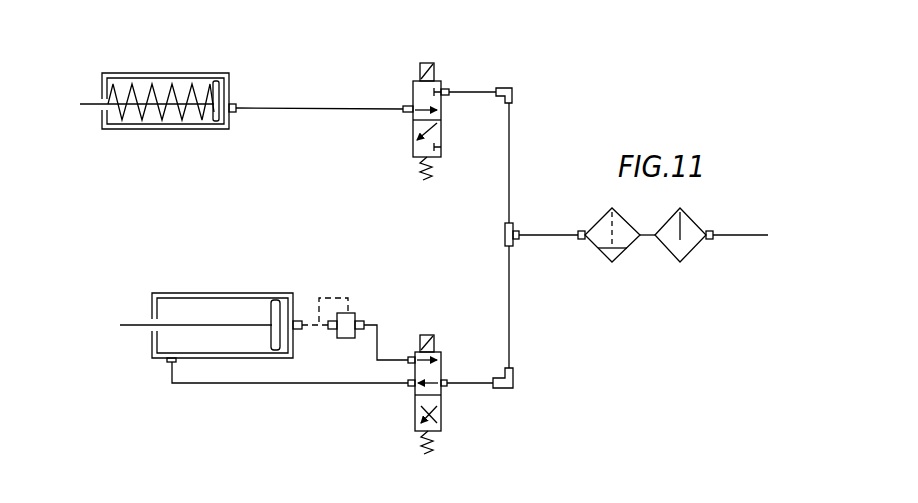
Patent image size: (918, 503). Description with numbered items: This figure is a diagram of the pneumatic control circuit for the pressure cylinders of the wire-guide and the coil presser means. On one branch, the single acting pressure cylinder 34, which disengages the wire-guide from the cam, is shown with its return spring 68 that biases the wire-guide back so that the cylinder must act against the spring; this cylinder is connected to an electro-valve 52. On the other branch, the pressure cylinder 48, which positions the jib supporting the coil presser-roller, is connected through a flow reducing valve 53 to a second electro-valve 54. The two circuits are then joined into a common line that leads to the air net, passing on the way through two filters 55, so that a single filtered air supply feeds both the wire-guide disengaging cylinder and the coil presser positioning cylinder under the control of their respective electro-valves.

The single acting pressure cylinder 34 is at (154, 103).
The return spring 68 is at (168, 113).
The electro-valve 52 is at (410, 93).
The pressure cylinder 48 is at (236, 268).
The flow reducing valve 53 is at (358, 318).
The electro-valve 54 is at (441, 357).
The filters 55 is at (675, 240).